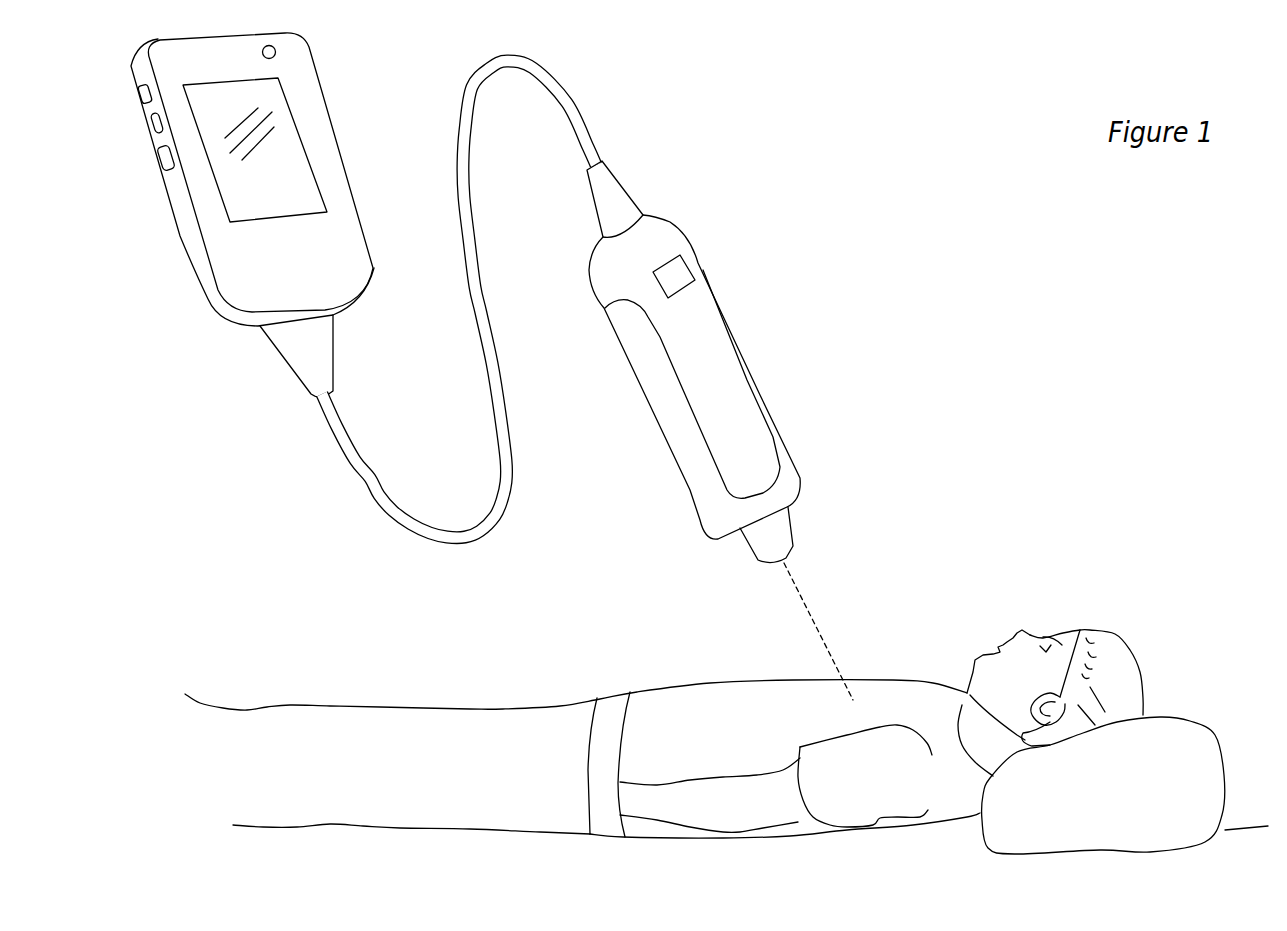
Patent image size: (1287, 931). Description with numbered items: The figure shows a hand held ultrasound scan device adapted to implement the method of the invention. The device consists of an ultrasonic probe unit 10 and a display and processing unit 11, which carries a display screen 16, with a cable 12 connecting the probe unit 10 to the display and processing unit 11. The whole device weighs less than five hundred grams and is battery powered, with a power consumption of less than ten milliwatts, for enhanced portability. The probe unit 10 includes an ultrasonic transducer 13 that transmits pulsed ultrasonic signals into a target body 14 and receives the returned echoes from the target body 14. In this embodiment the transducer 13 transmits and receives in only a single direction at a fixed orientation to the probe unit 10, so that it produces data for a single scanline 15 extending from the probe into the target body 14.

The ultrasonic probe unit 10 is at (743, 358).
The display and processing unit 11 is at (362, 232).
The cable 12 is at (522, 62).
The ultrasonic transducer 13 is at (790, 527).
The target body 14 is at (899, 687).
The scanline 15 is at (802, 598).
The display screen 16 is at (288, 118).